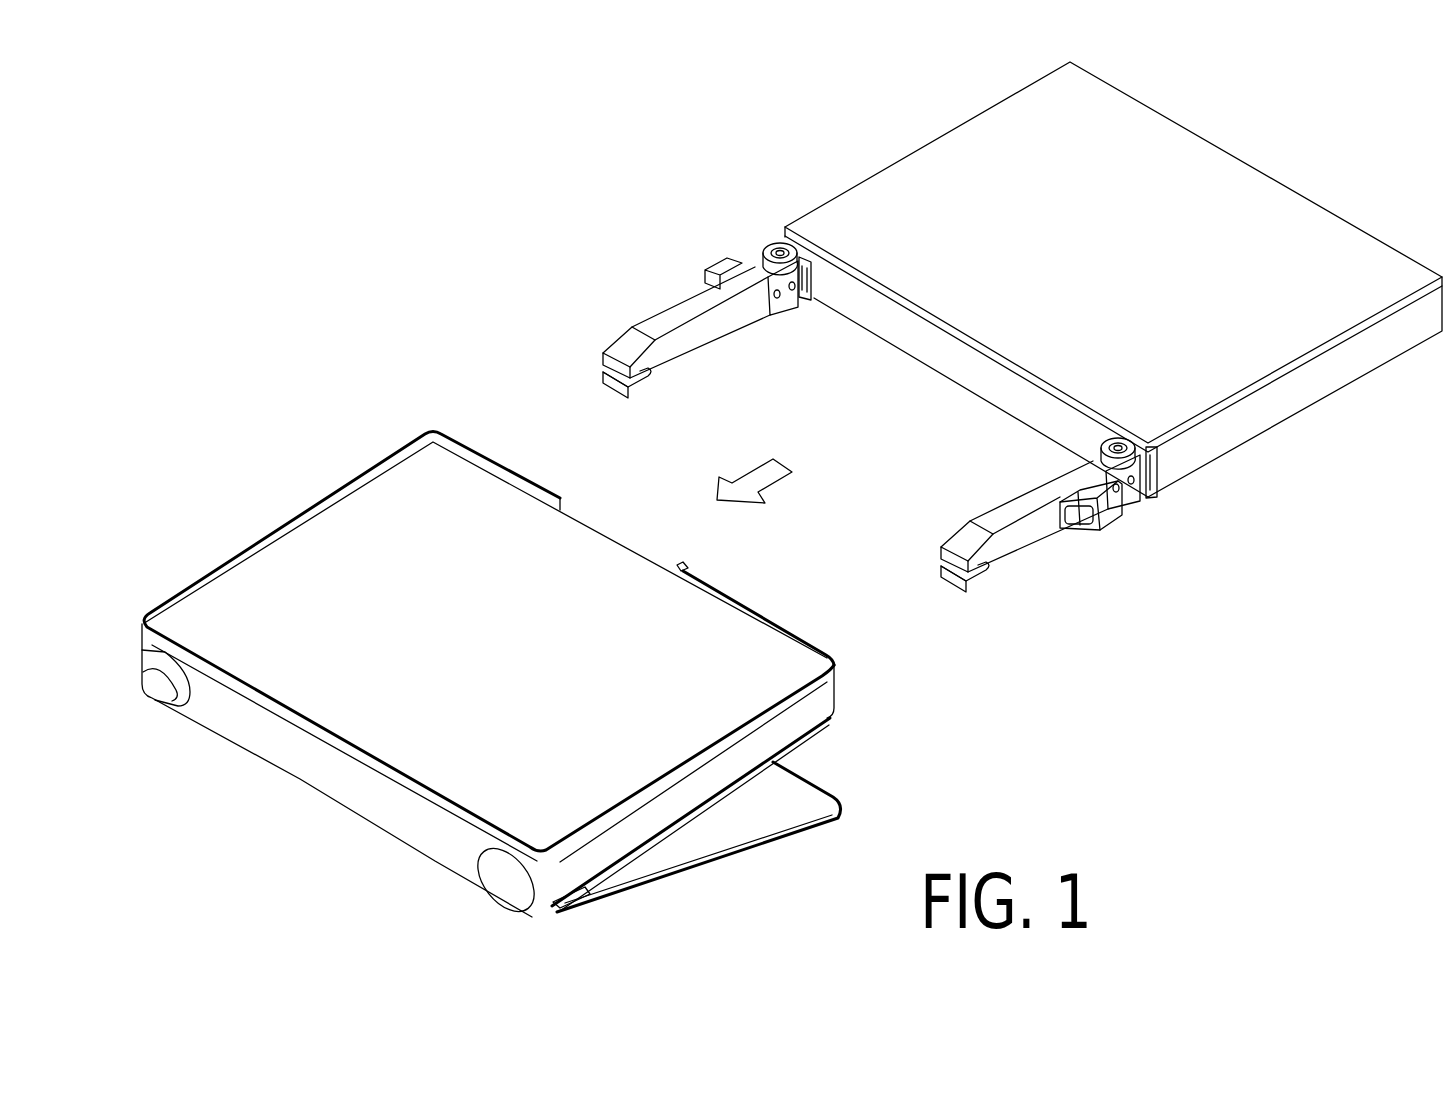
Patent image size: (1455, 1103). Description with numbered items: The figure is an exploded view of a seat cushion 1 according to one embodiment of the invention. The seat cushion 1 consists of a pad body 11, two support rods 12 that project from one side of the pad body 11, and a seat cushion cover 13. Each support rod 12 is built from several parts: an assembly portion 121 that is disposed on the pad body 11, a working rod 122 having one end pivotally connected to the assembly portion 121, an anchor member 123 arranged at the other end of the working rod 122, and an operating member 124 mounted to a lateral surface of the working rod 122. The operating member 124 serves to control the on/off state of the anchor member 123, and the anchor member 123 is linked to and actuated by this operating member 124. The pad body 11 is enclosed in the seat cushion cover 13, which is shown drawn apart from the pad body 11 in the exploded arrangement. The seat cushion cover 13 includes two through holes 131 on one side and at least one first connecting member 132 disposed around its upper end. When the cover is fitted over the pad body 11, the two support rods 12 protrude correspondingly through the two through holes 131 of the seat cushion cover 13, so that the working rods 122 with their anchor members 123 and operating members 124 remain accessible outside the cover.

The seat cushion 1 is at (1330, 483).
The pad body 11 is at (1249, 197).
The support rod 12 is at (648, 280).
The assembly portion 121 is at (1142, 473).
The working rod 122 is at (1033, 543).
The anchor member 123 is at (953, 583).
The operating member 124 is at (1107, 517).
The seat cushion cover 13 is at (307, 773).
The through hole 131 is at (170, 695).
The first connecting member 132 is at (313, 510).